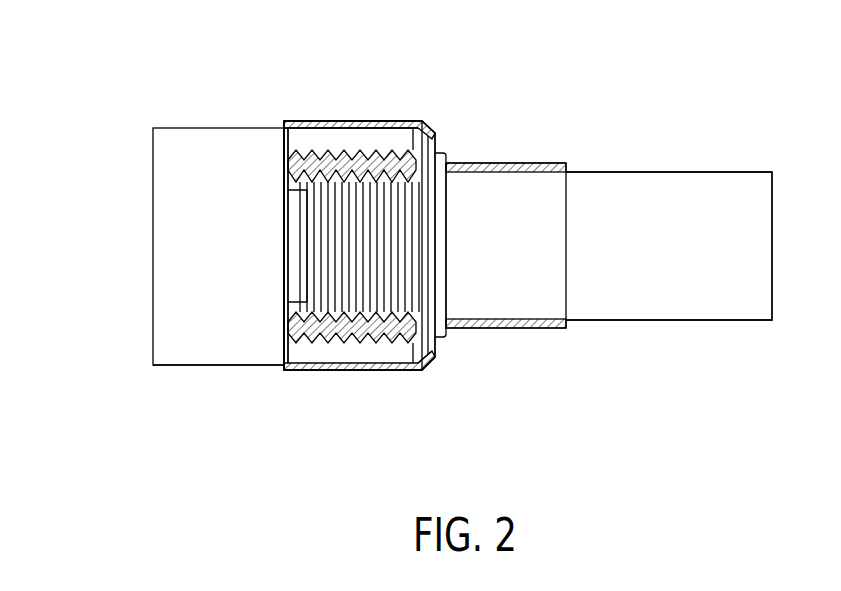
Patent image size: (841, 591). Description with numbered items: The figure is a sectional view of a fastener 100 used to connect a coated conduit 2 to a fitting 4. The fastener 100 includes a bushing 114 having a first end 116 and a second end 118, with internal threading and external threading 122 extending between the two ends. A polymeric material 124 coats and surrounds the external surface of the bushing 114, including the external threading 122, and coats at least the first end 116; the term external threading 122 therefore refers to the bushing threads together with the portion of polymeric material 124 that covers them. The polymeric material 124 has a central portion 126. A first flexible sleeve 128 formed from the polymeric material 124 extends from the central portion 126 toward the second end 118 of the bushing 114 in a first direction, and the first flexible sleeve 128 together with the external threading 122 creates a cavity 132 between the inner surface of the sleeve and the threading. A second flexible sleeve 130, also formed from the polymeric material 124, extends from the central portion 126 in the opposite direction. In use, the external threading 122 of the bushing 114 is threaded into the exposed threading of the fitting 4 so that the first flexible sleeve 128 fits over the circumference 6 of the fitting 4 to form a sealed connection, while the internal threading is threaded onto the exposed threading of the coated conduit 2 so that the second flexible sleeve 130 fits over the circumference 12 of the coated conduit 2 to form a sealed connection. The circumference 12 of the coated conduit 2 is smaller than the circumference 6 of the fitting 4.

The coated conduit 2 is at (647, 295).
The fitting 4 is at (153, 380).
The circumference 6 is at (203, 366).
The circumference 12 is at (740, 320).
The fastener 100 is at (506, 94).
The bushing 114 is at (260, 218).
The first end 116 is at (428, 297).
The second end 118 is at (288, 272).
The external threading 122 is at (352, 150).
The polymeric material 124 is at (389, 130).
The central portion 126 is at (442, 352).
The first flexible sleeve 128 is at (318, 150).
The second flexible sleeve 130 is at (536, 163).
The cavity 132 is at (291, 140).